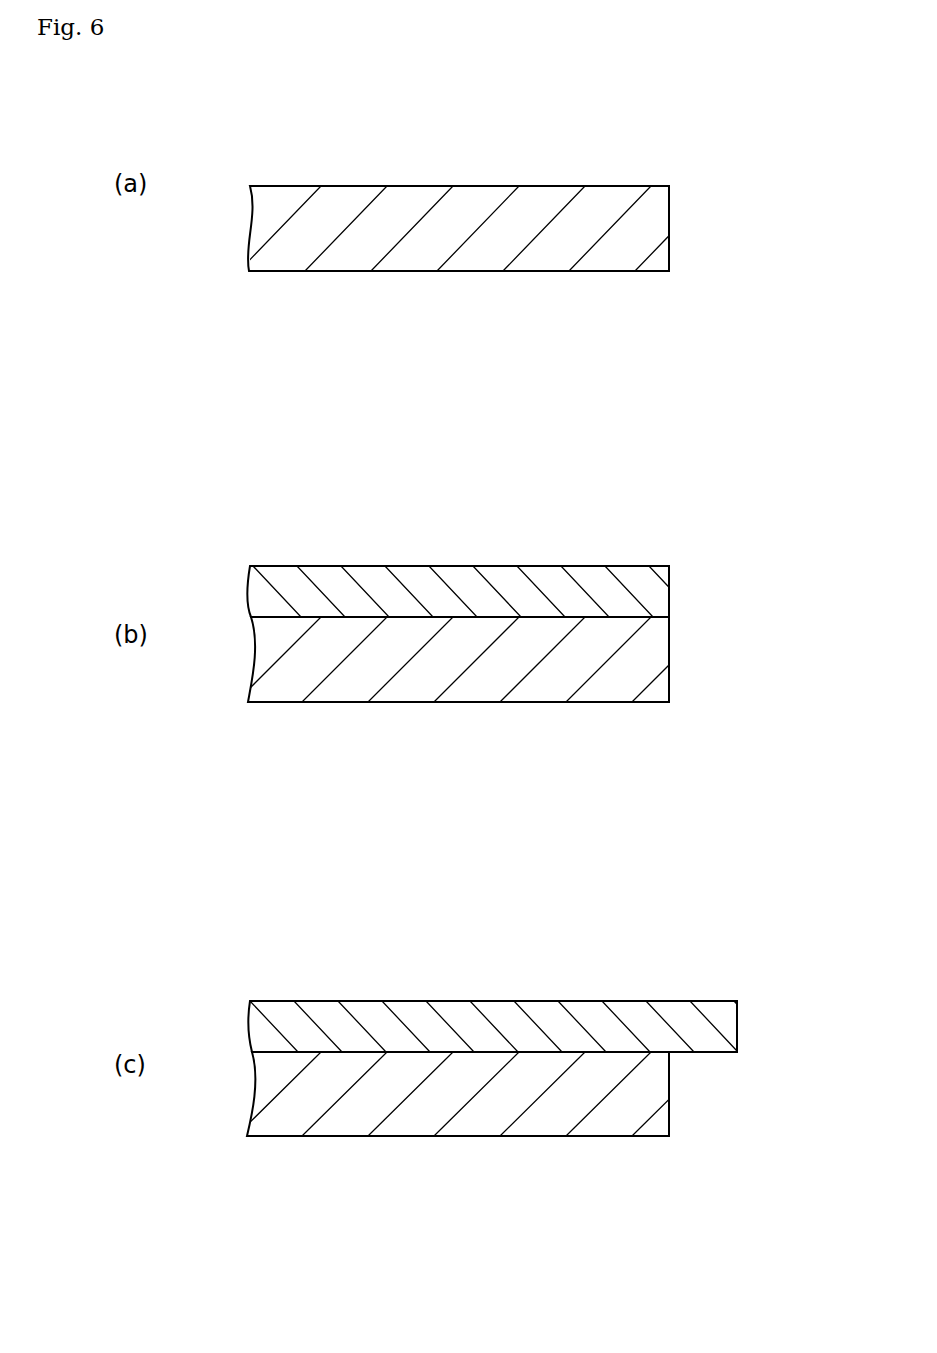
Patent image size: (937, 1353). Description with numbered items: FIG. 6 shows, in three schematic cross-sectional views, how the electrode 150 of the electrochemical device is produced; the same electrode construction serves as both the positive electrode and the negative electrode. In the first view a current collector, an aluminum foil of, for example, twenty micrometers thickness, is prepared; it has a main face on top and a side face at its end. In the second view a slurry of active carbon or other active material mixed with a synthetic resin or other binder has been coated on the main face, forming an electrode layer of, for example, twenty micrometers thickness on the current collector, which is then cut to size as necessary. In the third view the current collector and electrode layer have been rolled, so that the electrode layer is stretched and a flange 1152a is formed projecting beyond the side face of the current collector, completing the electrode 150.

The electrode 150 is at (523, 1055).
The protruding portion of second layer 1152a is at (672, 1061).